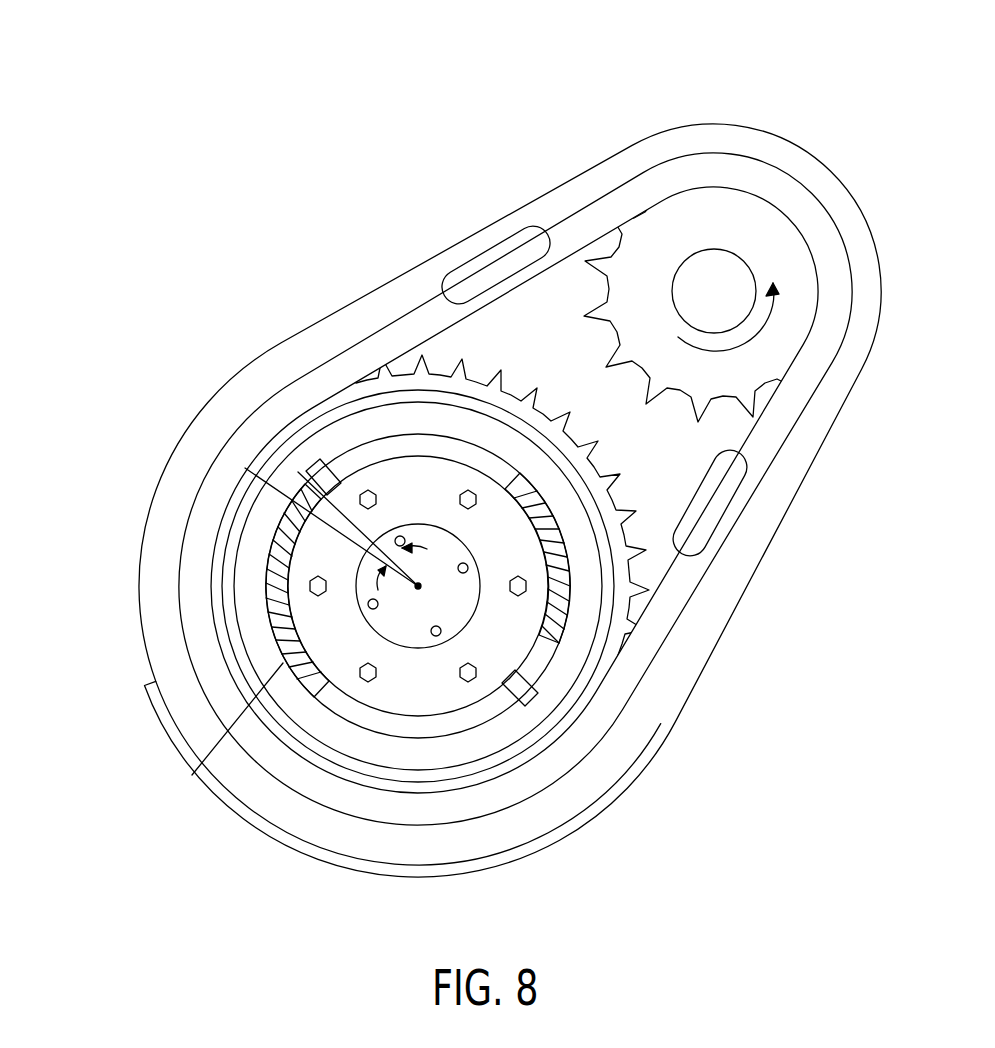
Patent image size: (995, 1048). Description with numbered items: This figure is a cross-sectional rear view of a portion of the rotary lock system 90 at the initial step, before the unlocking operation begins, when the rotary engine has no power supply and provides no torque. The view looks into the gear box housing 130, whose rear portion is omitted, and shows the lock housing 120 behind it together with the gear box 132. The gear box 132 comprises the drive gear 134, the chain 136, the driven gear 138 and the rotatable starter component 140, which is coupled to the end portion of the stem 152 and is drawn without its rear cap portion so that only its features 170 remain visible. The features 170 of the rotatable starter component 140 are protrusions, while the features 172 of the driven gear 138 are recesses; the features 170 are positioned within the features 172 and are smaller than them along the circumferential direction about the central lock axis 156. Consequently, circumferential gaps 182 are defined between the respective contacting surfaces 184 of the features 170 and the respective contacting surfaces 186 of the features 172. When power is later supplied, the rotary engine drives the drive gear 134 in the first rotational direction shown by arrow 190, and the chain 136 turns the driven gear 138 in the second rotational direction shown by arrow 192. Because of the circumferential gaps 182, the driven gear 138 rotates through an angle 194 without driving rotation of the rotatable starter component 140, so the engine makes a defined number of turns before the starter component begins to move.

The rotary lock system 90 is at (820, 85).
The lock housing 120 is at (402, 673).
The gear box housing 130 is at (623, 170).
The gear box 132 is at (719, 106).
The drive gear 134 is at (757, 236).
The chain 136 is at (733, 497).
The driven gear 138 is at (488, 716).
The rotatable starter component 140 is at (728, 693).
The stem 152 is at (413, 607).
The central lock axis 156 is at (418, 586).
The features 170 is at (276, 600).
The features 172 is at (573, 583).
The circumferential gaps 182 is at (325, 472).
The contacting surfaces 184 is at (307, 552).
The contacting surfaces 186 is at (322, 462).
The arrow 190 is at (760, 333).
The arrow 192 is at (245, 468).
The angle 194 is at (418, 543).